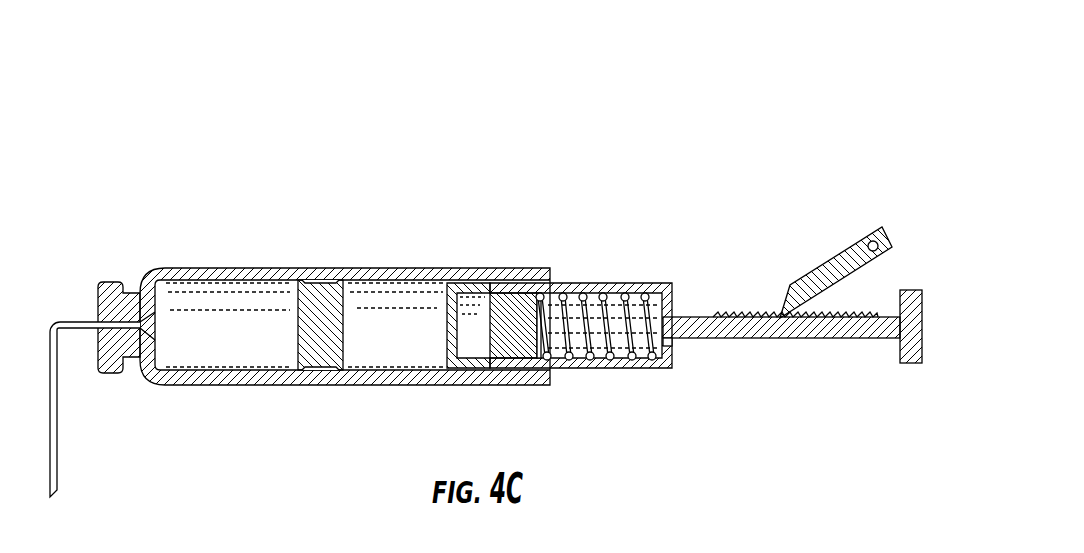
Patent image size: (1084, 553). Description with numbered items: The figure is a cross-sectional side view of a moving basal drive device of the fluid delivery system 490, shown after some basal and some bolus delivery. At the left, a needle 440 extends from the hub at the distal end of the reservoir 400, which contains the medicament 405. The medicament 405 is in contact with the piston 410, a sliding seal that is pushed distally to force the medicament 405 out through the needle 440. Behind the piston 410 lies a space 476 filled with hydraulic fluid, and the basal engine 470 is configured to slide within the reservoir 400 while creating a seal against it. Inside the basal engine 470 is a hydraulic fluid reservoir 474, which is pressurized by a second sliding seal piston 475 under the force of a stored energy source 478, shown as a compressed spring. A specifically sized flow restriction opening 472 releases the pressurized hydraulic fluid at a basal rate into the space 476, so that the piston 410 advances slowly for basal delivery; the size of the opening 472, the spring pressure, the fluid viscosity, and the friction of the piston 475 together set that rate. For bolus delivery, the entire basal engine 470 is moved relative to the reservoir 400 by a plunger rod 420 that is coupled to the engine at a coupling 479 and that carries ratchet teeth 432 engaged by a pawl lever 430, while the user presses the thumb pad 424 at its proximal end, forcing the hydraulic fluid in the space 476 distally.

The fluid delivery system 490 is at (188, 238).
The reservoir 400 is at (217, 270).
The medicament 405 is at (232, 330).
The piston 410 is at (322, 272).
The space 476 is at (413, 350).
The flow restriction opening 472 is at (458, 323).
The hydraulic fluid reservoir 474 is at (469, 300).
The second sliding seal piston 475 is at (515, 295).
The basal engine 470 is at (592, 283).
The stored energy source 478 is at (613, 360).
The rod coupling 479 is at (673, 347).
The plunger rod 420 is at (795, 338).
The ratchet teeth 432 is at (723, 317).
The pawl lever 430 is at (825, 262).
The thumb pad 424 is at (922, 327).
The needle 440 is at (60, 463).